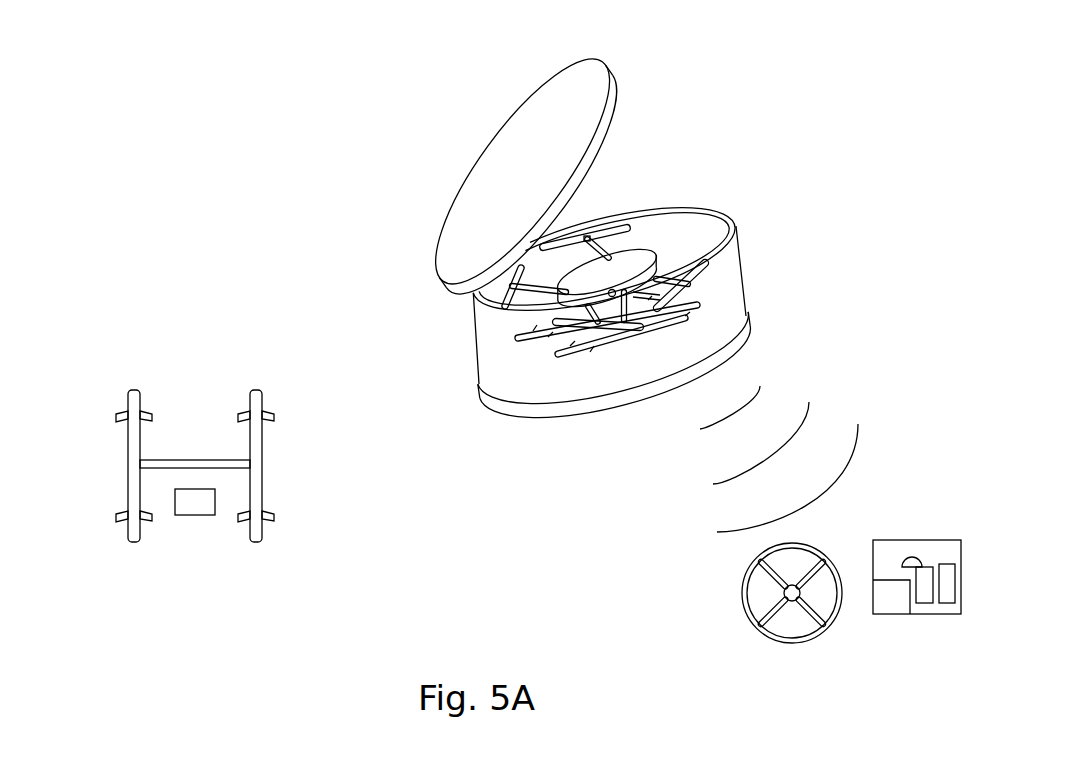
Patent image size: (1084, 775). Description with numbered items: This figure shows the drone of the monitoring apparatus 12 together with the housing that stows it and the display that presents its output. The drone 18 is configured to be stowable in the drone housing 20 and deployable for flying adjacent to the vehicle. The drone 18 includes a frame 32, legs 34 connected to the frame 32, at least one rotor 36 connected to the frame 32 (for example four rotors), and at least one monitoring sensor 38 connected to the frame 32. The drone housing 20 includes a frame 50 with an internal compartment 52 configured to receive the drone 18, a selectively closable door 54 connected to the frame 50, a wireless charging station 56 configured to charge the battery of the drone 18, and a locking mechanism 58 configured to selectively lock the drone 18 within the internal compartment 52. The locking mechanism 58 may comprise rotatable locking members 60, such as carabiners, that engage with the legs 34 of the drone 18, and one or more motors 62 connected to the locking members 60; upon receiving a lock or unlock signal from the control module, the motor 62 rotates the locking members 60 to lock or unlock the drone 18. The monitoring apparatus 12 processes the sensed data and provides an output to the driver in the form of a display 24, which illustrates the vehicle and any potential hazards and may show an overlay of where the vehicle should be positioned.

The monitoring apparatus 12 is at (594, 240).
The drone housing 20 is at (466, 127).
The selectively closable door 54 is at (446, 222).
The frame 50 is at (607, 298).
The internal compartment 52 is at (730, 194).
The wireless charging station 56 is at (753, 333).
The drone 18 is at (612, 303).
The rotor 36 is at (623, 226).
The monitoring sensor 38 is at (612, 297).
The locking mechanism 58 is at (343, 462).
The frame 32 is at (200, 458).
The legs 34 is at (266, 486).
The rotatable locking members 60 is at (270, 415).
The motor 62 is at (198, 517).
The display 24 is at (932, 630).